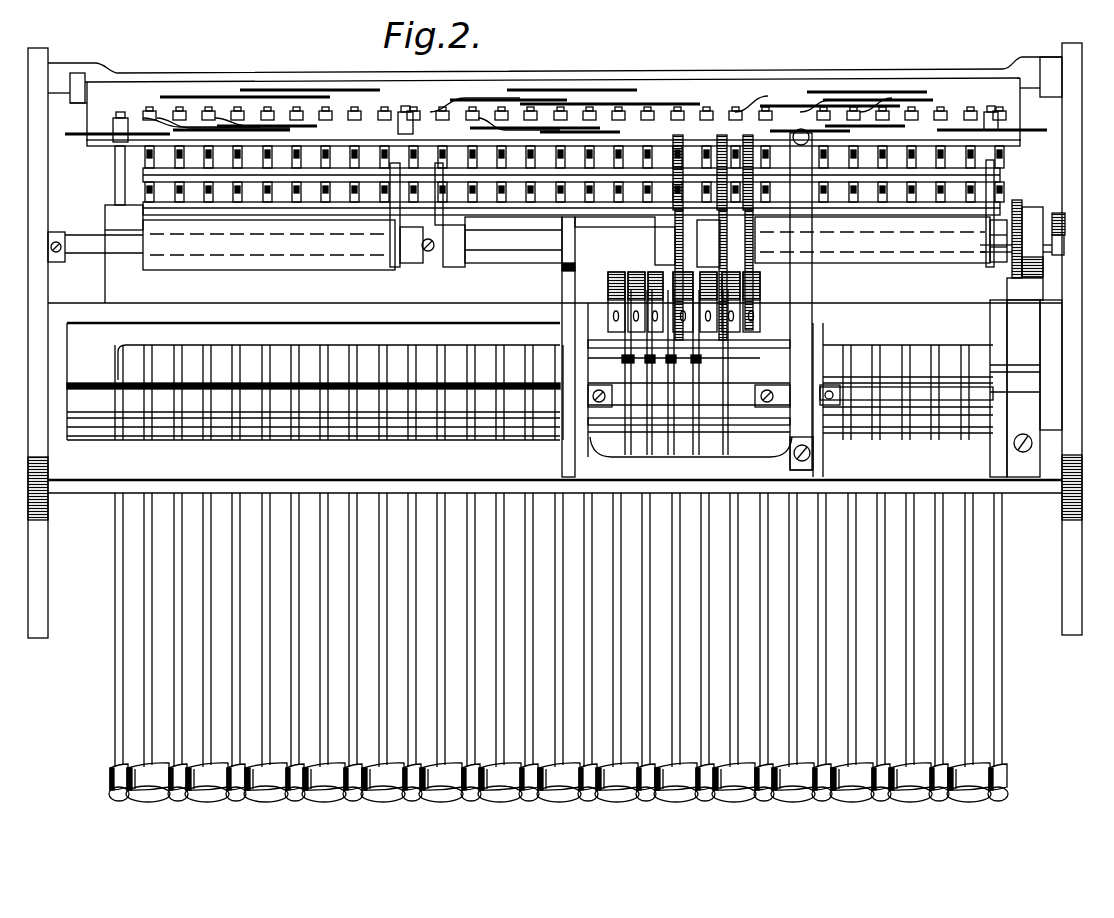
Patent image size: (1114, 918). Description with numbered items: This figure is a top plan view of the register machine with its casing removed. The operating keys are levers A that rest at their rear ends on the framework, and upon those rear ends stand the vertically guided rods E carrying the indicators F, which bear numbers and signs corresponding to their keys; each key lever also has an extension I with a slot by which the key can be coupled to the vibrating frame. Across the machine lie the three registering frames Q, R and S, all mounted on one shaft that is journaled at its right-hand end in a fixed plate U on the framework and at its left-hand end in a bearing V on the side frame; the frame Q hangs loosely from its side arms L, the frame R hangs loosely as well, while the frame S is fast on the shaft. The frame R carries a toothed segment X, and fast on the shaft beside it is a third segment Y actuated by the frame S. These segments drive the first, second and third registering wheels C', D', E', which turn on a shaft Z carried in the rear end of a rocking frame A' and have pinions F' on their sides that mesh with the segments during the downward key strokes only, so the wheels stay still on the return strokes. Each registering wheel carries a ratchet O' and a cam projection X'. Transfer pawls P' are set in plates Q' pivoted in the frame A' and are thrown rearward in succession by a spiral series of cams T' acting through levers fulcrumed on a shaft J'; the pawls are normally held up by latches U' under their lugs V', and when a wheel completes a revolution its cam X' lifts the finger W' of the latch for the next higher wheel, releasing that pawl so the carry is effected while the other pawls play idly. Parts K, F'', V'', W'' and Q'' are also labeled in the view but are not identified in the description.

The guide rails K is at (290, 184).
The indicators F is at (547, 117).
The vertically-guided rods E is at (289, 105).
The pinions F' is at (460, 95).
The extension I is at (115, 176).
The side arms L is at (142, 212).
The bearing V is at (95, 234).
The registering frame S is at (290, 262).
The registering frame R is at (466, 268).
The cams T' is at (513, 246).
The third segment Y is at (675, 248).
The toothed segment X is at (709, 243).
The fingers W' is at (723, 237).
The shaft Z is at (790, 289).
The registering frame Q is at (872, 240).
The fixed plate U is at (987, 246).
The shaft J' is at (903, 400).
The ratchets O' is at (691, 293).
The third registering wheel E' is at (683, 270).
The second registering wheel D' is at (706, 267).
The first registering wheel C' is at (733, 272).
The arm F'' is at (773, 276).
The transfer pawls P' is at (690, 397).
The lugs V' is at (660, 372).
The lever V'' is at (721, 381).
The latches U' is at (738, 369).
The cam projections X' is at (667, 330).
The pawl W'' is at (657, 337).
The guide Q'' is at (623, 463).
The plates Q' is at (683, 463).
The frame A' is at (761, 454).
The key levers A is at (558, 647).